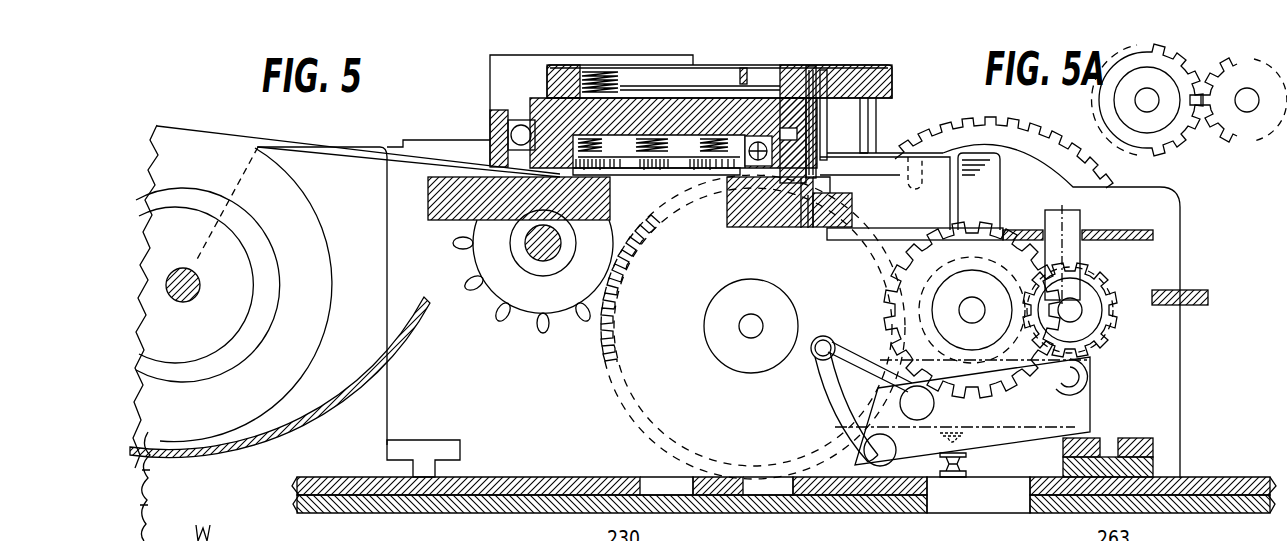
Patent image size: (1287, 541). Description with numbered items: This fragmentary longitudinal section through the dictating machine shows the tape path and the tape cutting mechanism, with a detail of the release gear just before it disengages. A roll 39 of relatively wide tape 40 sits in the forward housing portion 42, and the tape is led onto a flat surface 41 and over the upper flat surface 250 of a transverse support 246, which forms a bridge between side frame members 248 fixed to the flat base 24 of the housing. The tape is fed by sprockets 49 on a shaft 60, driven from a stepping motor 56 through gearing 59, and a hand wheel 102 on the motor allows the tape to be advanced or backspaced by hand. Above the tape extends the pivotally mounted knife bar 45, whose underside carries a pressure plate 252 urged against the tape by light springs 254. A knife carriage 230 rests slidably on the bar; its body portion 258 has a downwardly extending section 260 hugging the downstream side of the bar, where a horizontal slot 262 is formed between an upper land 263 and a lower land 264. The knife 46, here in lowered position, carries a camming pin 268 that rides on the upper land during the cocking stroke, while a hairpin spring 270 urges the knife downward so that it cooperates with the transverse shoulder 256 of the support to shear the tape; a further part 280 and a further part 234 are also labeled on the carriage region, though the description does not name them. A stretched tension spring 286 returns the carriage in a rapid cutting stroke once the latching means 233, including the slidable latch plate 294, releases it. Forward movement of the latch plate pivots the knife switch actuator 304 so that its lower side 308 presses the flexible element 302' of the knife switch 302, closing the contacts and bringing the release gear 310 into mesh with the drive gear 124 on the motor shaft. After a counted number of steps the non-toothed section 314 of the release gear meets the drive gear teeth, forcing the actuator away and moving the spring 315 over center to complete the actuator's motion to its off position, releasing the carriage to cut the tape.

In FIG. 5, the base 24 is at (511, 475).
In FIG. 5, the roll 39 is at (303, 222).
In FIG. 5, the tape 40 is at (442, 160).
In FIG. 5, the flat surface 41 is at (917, 187).
In FIG. 5, the housing portion 42 is at (508, 213).
In FIG. 5, the knife bar 45 is at (823, 240).
In FIG. 5, the knife 46 is at (816, 112).
In FIG. 5, the sprockets 49 is at (473, 287).
In FIG. 5, the stepping motor 56 is at (1036, 141).
In FIG. 5, the gearing 59 is at (740, 413).
In FIG. 5, the shaft 60 is at (540, 257).
In FIG. 5, the hand wheel 102 is at (998, 122).
In FIG. 5, the drive gear 124 is at (998, 360).
In FIG. 5A, the drive gear 124 is at (1193, 150).
In FIG. 5, the knife carriage 230 is at (915, 58).
In FIG. 5, the latching means 233 is at (948, 146).
In FIG. 5, the bracket arm 234 is at (867, 130).
In FIG. 5, the transverse support 246 is at (426, 216).
In FIG. 5, the side frame members 248 is at (1177, 440).
In FIG. 5, the upper flat surface 250 is at (440, 172).
In FIG. 5, the pressure plate 252 is at (648, 162).
In FIG. 5, the light springs 254 is at (672, 132).
In FIG. 5, the shoulder 256 is at (800, 232).
In FIG. 5, the body portion 258 is at (572, 57).
In FIG. 5, the downwardly extending section 260 is at (804, 118).
In FIG. 5, the horizontal slot 262 is at (728, 222).
In FIG. 5, the upper land 263 is at (814, 78).
In FIG. 5, the lower land 264 is at (820, 168).
In FIG. 5, the camming pin 268 is at (814, 155).
In FIG. 5, the hairpin spring 270 is at (757, 86).
In FIG. 5, the screw 280 is at (743, 70).
In FIG. 5, the tension spring 286 is at (507, 135).
In FIG. 5, the latch plate 294 is at (984, 190).
In FIG. 5, the knife switch 302 is at (983, 424).
In FIG. 5, the flexible element 302' is at (984, 464).
In FIG. 5, the knife switch actuator 304 is at (1080, 413).
In FIG. 5, the lower side 308 is at (846, 420).
In FIG. 5, the release gear 310 is at (1084, 274).
In FIG. 5A, the release gear 310 is at (1240, 142).
In FIG. 5, the non-toothed section 314 is at (1108, 306).
In FIG. 5A, the non-toothed section 314 is at (1232, 63).
In FIG. 5, the spring 315 is at (822, 393).